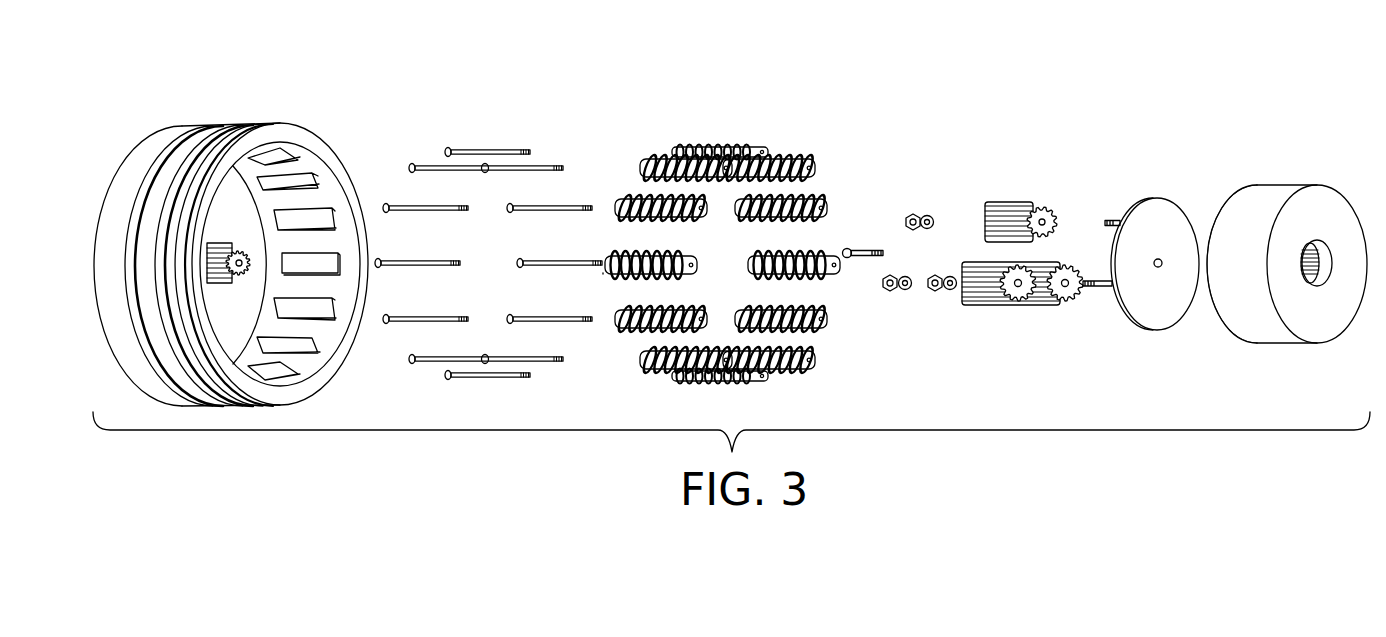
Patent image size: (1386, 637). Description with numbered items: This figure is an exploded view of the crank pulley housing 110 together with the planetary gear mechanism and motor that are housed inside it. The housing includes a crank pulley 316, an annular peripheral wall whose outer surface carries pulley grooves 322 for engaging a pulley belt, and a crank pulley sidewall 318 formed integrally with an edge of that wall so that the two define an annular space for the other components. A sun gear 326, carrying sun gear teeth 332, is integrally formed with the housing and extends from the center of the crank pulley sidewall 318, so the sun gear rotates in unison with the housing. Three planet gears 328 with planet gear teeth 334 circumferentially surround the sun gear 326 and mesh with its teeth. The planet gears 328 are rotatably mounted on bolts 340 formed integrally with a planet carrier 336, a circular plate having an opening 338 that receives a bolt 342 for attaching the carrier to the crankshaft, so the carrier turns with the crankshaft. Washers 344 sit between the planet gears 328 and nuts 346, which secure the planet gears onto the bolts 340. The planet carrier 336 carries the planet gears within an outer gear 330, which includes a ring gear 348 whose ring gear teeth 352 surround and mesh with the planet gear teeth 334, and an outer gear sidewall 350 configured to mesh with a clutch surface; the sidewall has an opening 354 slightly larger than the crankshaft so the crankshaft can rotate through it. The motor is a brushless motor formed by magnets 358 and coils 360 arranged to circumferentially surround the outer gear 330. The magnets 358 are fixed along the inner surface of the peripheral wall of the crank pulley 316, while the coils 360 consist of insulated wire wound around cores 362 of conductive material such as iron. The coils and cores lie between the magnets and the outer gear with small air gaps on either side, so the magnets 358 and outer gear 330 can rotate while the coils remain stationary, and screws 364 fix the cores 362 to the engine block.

The crank pulley housing 110 is at (140, 122).
The crank pulley 316 is at (300, 140).
The crank pulley sidewall 318 is at (243, 218).
The pulley grooves 322 is at (219, 243).
The sun gear 326 is at (242, 263).
The planet gears 328 is at (1012, 215).
The outer gear 330 is at (1328, 162).
The sun gear teeth 332 is at (238, 250).
The planet gear teeth 334 is at (1055, 206).
The planet carrier 336 is at (1158, 204).
The opening 338 is at (1158, 268).
The bolts 340 is at (1115, 219).
The bolt 342 is at (862, 248).
The washers 344 is at (952, 275).
The nuts 346 is at (888, 275).
The ring gear 348 is at (1263, 196).
The outer gear sidewall 350 is at (1320, 210).
The ring gear teeth 352 is at (1302, 274).
The opening 354 is at (1325, 278).
The magnets 358 is at (308, 343).
The coils 360 is at (660, 157).
The cores 362 is at (615, 322).
The screws 364 is at (428, 166).